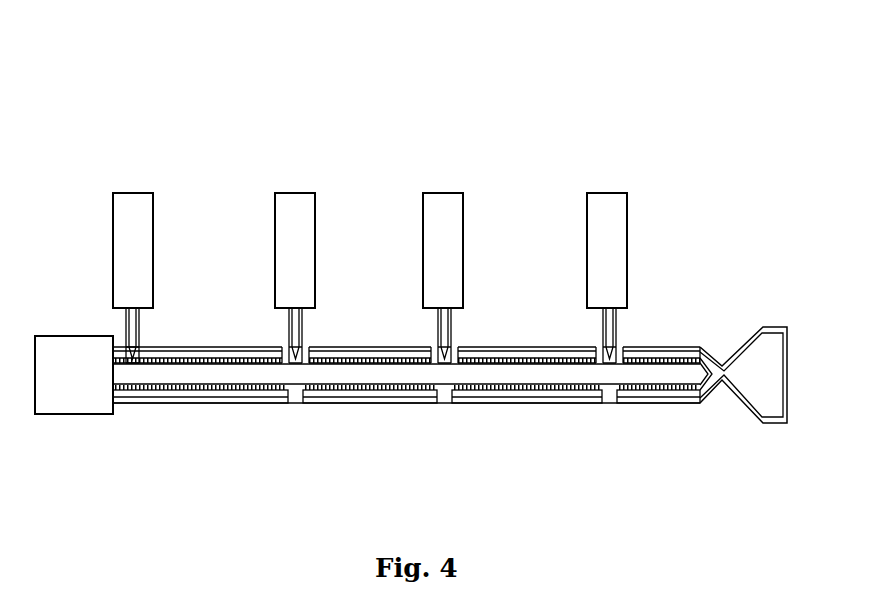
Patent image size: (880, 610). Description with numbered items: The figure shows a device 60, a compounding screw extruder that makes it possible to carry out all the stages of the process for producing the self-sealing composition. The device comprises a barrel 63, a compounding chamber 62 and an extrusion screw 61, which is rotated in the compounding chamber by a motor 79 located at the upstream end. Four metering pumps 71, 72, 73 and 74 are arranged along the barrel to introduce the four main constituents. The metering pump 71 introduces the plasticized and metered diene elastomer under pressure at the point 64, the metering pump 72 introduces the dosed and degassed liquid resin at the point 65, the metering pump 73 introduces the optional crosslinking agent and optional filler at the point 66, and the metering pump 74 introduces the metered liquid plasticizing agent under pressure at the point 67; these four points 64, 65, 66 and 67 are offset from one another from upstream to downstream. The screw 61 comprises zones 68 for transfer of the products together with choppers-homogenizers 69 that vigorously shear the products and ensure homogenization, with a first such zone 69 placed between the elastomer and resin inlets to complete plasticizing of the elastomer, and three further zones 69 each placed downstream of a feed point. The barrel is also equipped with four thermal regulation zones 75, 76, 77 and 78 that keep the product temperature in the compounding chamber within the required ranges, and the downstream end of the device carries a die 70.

The device 60 is at (247, 133).
The extrusion screw 61 is at (272, 376).
The compounding chamber 62 is at (395, 352).
The barrel 63 is at (215, 350).
The point 64 is at (128, 350).
The point 65 is at (290, 350).
The point 66 is at (440, 352).
The point 67 is at (600, 352).
The zones for transfer of the products 68 is at (145, 400).
The choppers-homogenizers 69 is at (165, 392).
The die 70 is at (780, 330).
The metering pump 71 is at (132, 236).
The metering pump 72 is at (293, 237).
The metering pump 73 is at (445, 237).
The metering pump 74 is at (606, 237).
The thermal regulation zone 75 is at (140, 400).
The thermal regulation zone 76 is at (328, 400).
The thermal regulation zone 77 is at (470, 400).
The thermal regulation zone 78 is at (628, 400).
The motor 79 is at (85, 405).